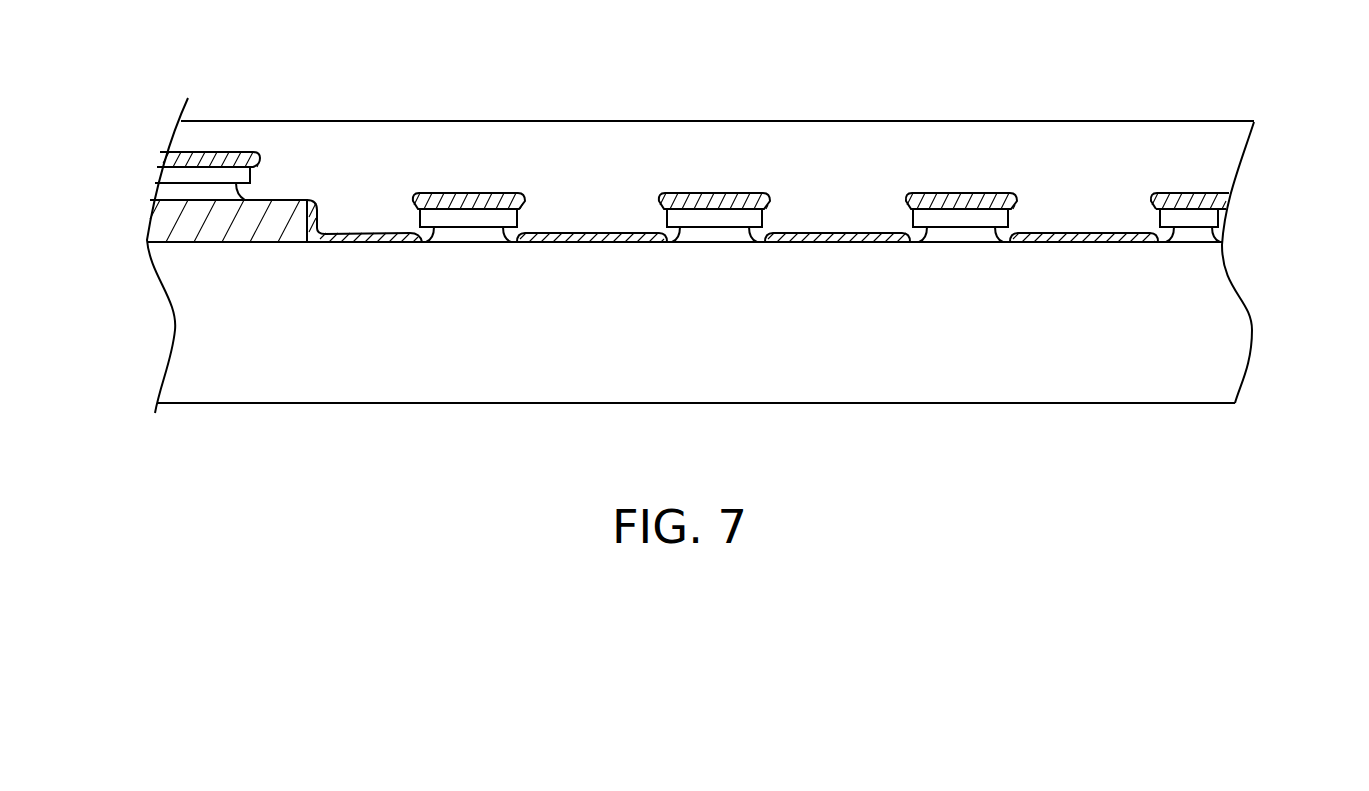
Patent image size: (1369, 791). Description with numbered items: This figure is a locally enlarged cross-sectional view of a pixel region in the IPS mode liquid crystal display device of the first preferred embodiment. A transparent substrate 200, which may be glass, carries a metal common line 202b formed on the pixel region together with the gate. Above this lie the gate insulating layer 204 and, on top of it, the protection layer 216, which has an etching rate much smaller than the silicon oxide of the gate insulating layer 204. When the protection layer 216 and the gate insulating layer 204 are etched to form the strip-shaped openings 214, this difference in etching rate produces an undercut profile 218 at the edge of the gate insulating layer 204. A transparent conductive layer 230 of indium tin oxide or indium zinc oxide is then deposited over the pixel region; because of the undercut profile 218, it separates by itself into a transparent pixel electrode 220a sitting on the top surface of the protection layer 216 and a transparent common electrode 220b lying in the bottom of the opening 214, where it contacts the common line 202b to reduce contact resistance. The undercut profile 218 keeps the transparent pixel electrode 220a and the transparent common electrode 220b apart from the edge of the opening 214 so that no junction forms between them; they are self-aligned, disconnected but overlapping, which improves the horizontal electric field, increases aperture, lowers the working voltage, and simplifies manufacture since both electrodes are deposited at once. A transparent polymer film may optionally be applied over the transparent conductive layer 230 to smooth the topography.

The transparent substrate 200 is at (1217, 343).
The transparent conductive layer 230 is at (1217, 153).
The common line 202b is at (158, 217).
The transparent pixel electrode 220a is at (209, 156).
The transparent common electrode 220b is at (360, 233).
The gate insulating layer 204 is at (460, 235).
The protection layer 216 is at (505, 217).
The undercut profile 218 is at (745, 232).
The under bump metallurgy layer 214 is at (908, 218).